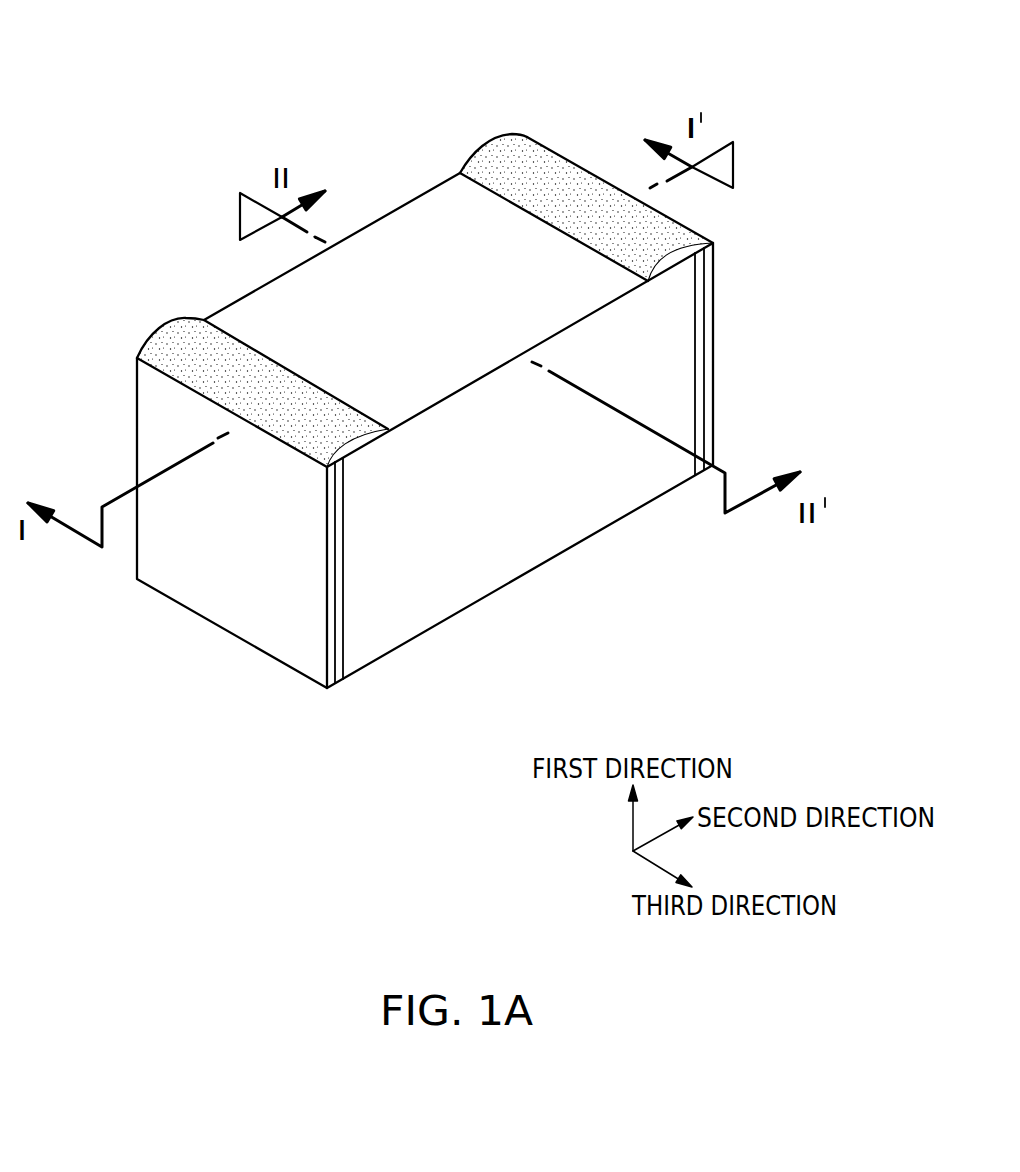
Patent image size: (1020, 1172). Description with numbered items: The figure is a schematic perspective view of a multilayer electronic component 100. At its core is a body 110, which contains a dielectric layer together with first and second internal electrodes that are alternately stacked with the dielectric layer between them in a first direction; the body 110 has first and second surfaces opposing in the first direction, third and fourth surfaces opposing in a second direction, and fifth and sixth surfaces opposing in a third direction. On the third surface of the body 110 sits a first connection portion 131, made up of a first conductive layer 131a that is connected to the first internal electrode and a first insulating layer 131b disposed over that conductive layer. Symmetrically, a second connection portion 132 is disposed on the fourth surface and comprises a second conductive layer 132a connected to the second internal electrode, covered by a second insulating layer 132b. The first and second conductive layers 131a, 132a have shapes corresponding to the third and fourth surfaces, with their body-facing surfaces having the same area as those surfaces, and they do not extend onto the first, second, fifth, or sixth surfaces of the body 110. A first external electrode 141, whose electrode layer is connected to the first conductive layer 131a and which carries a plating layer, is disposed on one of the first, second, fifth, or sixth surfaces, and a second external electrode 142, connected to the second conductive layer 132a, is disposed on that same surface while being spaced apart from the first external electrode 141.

The multilayer electronic component 100 is at (270, 36).
The body 110 is at (417, 213).
The first connection portion 131 is at (502, 578).
The first conductive layer 131a is at (340, 527).
The first insulating layer 131b is at (332, 597).
The second connection portion 132 is at (789, 361).
The second conductive layer 132a is at (702, 321).
The second insulating layer 132b is at (710, 390).
The first external electrode 141 is at (177, 337).
The second external electrode 142 is at (507, 150).